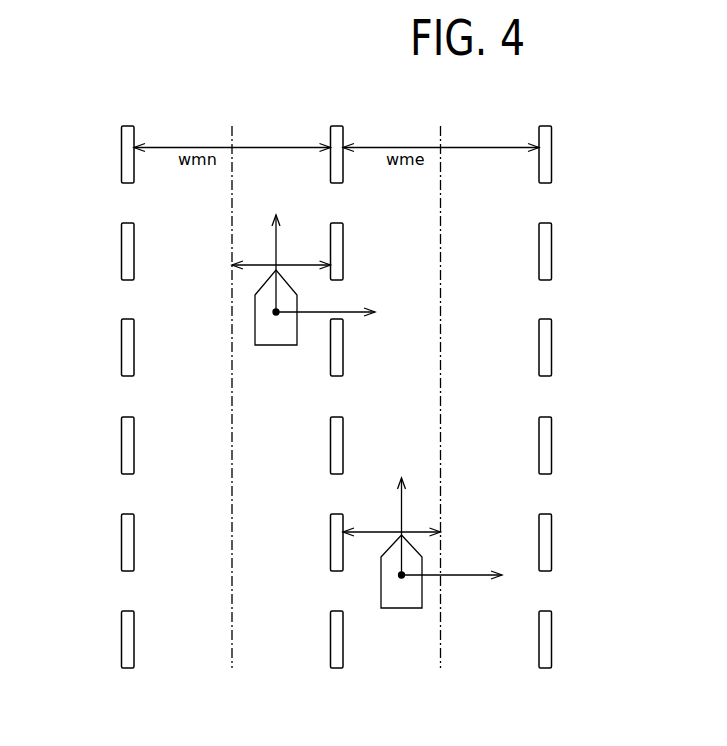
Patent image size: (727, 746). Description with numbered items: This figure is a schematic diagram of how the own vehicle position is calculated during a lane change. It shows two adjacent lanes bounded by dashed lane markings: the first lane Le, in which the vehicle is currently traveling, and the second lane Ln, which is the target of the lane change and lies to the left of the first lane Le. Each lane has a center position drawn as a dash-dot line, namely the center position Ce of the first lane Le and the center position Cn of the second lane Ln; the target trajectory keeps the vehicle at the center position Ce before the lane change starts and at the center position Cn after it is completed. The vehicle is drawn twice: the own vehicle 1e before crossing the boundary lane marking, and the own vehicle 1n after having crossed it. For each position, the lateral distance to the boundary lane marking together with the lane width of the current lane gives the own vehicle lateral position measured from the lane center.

The own vehicle after crossing the boundary lane marking 1n is at (277, 346).
The own vehicle before crossing the boundary lane marking 1e is at (402, 609).
The second lane Ln is at (146, 213).
The first lane Le is at (511, 209).
The center position of the second lane Cn is at (232, 132).
The center position of the first lane Ce is at (440, 133).